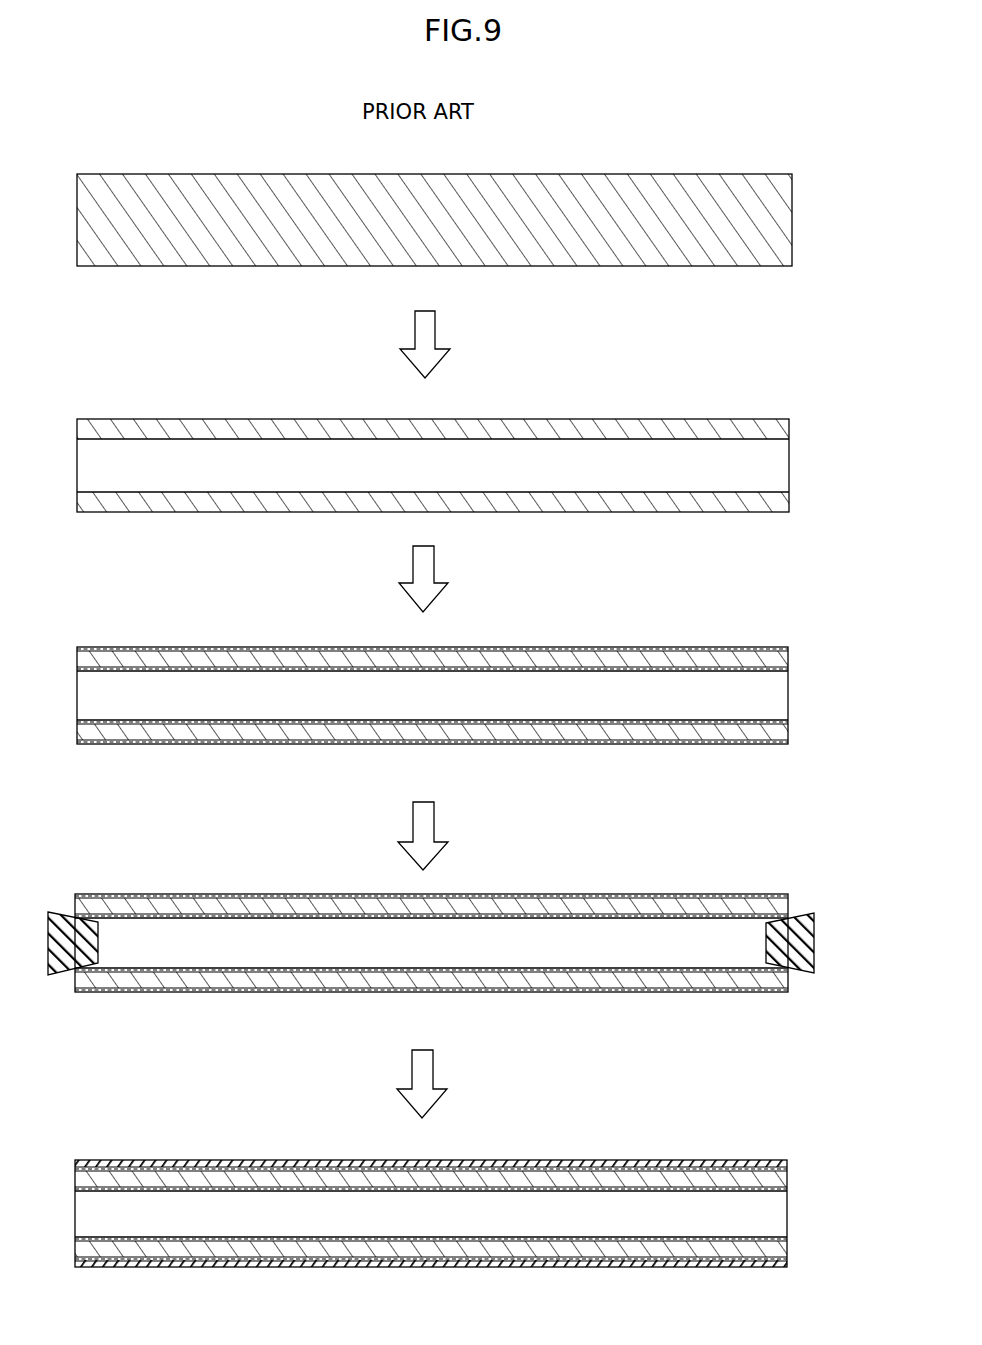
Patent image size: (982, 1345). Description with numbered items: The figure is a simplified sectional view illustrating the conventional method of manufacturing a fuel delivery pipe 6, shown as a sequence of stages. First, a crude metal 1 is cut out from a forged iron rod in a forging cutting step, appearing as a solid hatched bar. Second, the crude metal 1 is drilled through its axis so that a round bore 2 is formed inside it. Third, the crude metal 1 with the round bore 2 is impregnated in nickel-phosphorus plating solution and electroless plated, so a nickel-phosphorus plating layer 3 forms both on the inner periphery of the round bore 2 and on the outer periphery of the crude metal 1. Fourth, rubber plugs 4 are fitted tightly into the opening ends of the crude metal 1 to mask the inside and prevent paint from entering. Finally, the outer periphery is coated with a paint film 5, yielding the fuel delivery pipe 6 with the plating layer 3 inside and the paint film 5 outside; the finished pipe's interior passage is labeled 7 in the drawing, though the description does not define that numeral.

The crude metal 1 is at (512, 200).
The round bore 2 is at (657, 462).
The nickel-phosphorus plating layer 3 is at (605, 651).
The rubber plug 4 is at (70, 940).
The paint film 5 is at (618, 1163).
The fuel delivery pipe 6 is at (474, 1122).
The hollow portion after treatment 7 is at (718, 1207).